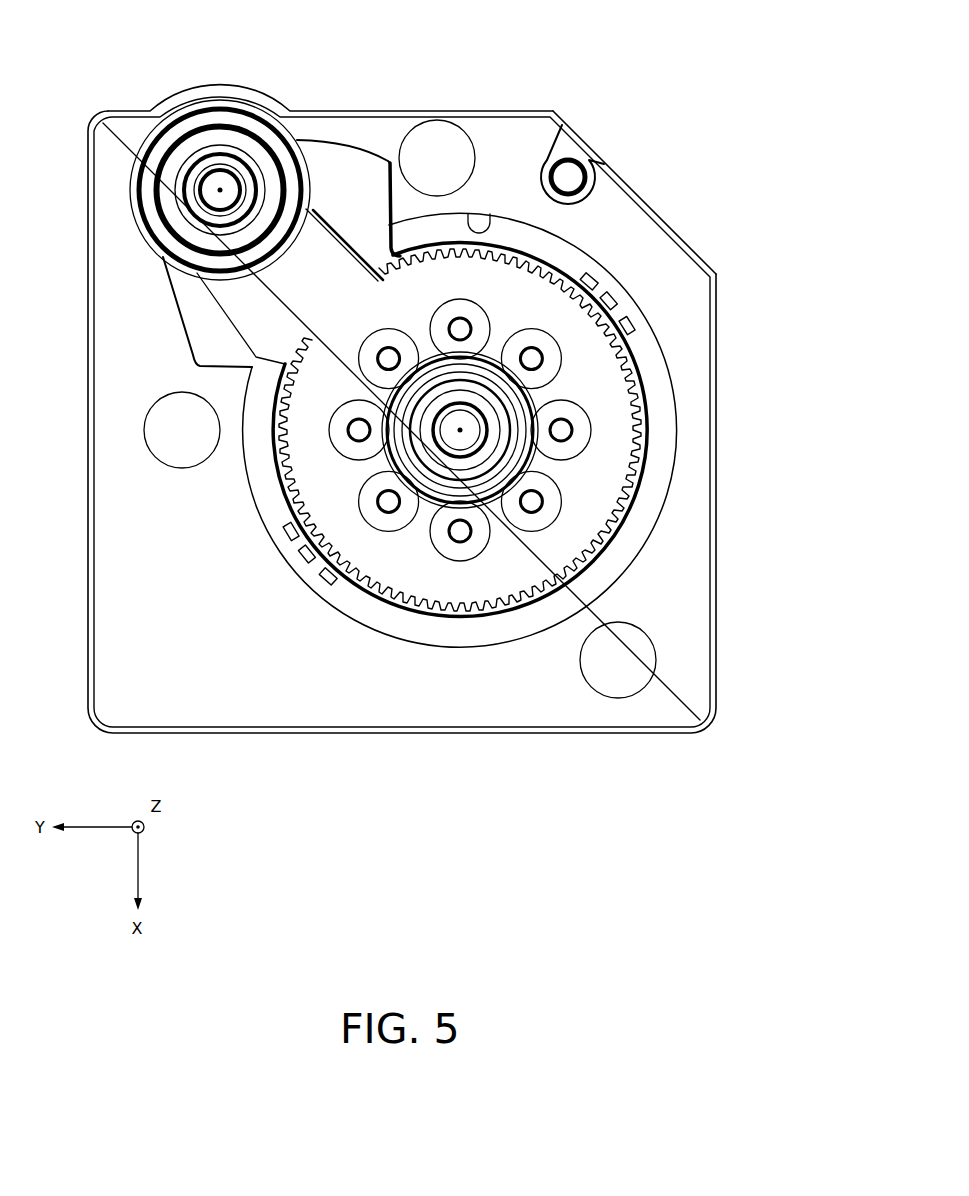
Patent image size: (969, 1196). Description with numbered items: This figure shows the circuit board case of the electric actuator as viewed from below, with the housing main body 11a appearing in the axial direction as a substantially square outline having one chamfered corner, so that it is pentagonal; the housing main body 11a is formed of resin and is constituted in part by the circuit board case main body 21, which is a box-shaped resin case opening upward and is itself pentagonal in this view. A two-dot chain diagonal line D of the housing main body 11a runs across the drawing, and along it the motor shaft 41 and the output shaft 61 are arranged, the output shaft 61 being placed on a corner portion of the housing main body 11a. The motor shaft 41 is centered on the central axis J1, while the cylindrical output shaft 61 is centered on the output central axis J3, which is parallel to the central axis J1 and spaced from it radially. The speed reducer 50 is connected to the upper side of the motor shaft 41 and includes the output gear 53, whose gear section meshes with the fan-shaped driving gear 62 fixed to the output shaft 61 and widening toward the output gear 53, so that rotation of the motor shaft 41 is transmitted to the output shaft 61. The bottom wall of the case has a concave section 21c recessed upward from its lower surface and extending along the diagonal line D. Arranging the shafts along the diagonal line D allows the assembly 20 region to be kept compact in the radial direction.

The housing main body 11a is at (700, 100).
The drive unit 20 is at (700, 200).
The circuit board case main body 21 is at (693, 300).
The concave section 21c is at (488, 213).
The motor shaft 41 is at (463, 434).
The speed reducer 50 is at (560, 267).
The output gear 53 is at (588, 384).
The output shaft 61 is at (263, 167).
The driving gear 62 is at (327, 257).
The diagonal line D is at (120, 140).
The central axis J1 is at (460, 430).
The output central axis J3 is at (221, 190).